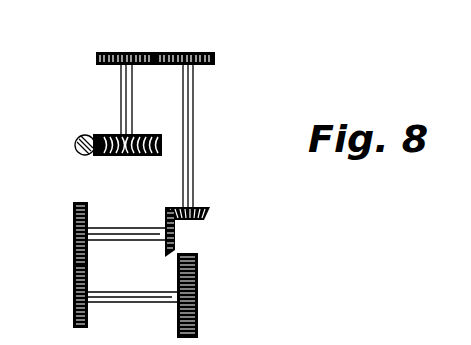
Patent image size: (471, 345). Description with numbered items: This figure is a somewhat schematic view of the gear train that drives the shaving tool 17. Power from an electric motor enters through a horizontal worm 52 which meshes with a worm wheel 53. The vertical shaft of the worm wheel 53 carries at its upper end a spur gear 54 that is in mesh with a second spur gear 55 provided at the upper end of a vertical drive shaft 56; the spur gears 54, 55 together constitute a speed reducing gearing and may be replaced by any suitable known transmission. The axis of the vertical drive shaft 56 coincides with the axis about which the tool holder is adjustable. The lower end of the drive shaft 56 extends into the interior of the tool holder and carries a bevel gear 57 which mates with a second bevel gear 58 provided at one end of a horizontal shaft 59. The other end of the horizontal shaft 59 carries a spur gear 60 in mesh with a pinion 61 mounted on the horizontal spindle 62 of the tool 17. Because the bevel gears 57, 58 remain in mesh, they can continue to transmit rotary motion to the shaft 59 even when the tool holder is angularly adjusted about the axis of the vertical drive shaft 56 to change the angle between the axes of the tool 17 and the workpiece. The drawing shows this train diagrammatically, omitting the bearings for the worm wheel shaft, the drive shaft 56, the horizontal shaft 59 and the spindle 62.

The tool 17 is at (198, 305).
The horizontal worm 52 is at (75, 146).
The worm wheel 53 is at (156, 157).
The spur gear 54 is at (120, 52).
The second spur gear 55 is at (205, 52).
The vertical drive shaft 56 is at (192, 128).
The bevel gear 57 is at (202, 209).
The second bevel gear 58 is at (165, 220).
The horizontal shaft 59 is at (134, 240).
The spur gear 60 is at (73, 226).
The pinion 61 is at (73, 306).
The horizontal spindle 62 is at (148, 302).